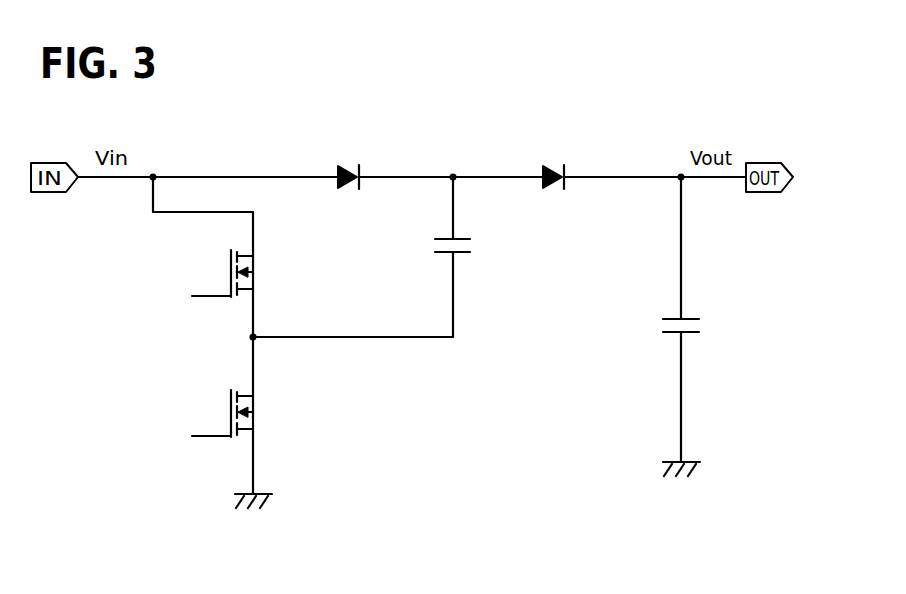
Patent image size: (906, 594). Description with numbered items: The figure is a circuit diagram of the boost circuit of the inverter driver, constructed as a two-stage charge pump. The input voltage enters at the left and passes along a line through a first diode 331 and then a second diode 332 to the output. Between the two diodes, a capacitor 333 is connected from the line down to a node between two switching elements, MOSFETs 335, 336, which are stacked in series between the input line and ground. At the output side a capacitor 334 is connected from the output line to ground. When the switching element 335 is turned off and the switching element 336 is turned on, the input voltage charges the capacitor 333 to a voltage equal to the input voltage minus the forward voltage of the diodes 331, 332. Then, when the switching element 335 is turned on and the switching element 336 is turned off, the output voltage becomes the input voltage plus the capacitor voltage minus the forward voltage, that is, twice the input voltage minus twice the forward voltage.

The diode 331 is at (345, 190).
The diode 332 is at (555, 190).
The capacitor 333 is at (443, 256).
The capacitor 334 is at (670, 316).
The switching element 335 is at (229, 268).
The switching element 336 is at (229, 408).